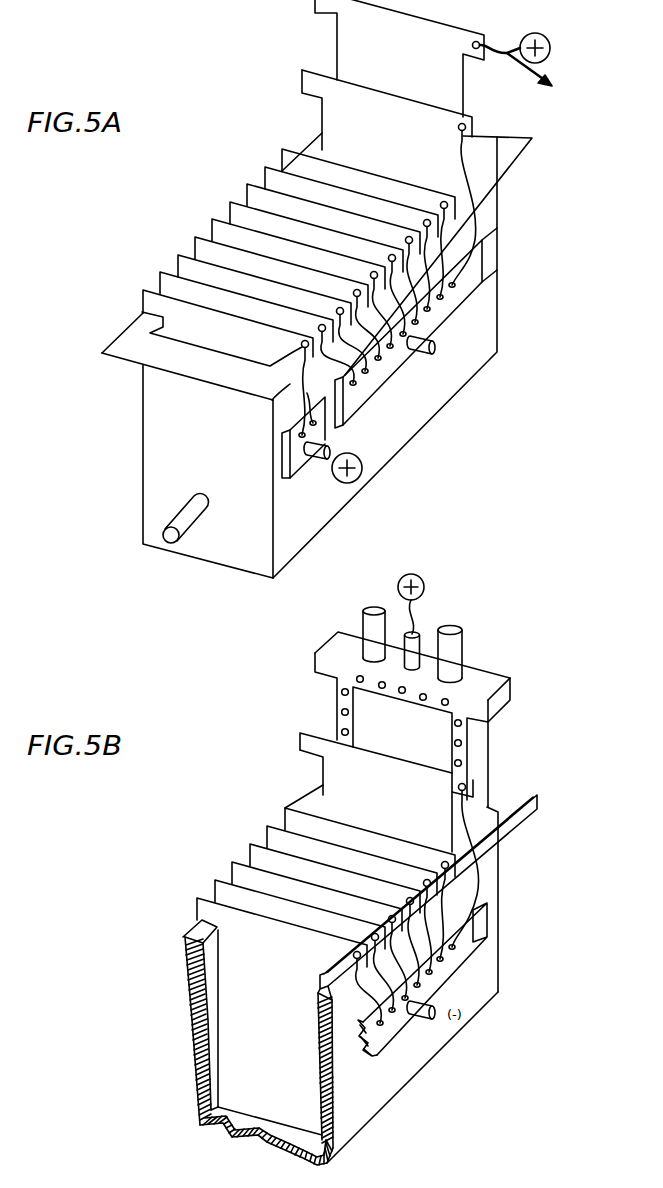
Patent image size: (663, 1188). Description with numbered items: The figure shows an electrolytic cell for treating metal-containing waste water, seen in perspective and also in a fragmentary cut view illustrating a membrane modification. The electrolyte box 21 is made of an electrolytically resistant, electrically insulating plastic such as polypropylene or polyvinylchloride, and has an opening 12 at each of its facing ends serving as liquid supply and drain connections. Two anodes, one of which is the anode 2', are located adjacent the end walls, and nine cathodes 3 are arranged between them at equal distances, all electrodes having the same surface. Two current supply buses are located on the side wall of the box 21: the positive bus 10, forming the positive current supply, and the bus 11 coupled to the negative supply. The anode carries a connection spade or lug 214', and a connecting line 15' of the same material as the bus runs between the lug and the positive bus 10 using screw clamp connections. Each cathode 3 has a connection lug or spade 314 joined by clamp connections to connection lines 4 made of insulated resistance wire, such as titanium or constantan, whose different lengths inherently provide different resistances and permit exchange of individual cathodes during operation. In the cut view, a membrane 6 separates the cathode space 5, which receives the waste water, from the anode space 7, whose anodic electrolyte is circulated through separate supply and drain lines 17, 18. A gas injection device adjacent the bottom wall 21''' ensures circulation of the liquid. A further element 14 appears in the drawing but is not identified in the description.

In FIG. 5A, the anode 2' is at (365, 58).
In FIG. 5A, the anode connection spade or lug 214' is at (536, 72).
In FIG. 5A, the cathodes 3 is at (222, 230).
In FIG. 5B, the cathodes 3 is at (223, 887).
In FIG. 5A, the opening 12 is at (172, 543).
In FIG. 5A, the positive bus terminal 10 is at (285, 458).
In FIG. 5A, the electrolyte box 21 is at (457, 298).
In FIG. 5A, the cathode connection lug or spade 314 is at (487, 197).
In FIG. 5A, the resistance connection lines 4 is at (473, 235).
In FIG. 5A, the negative bus 11 is at (473, 283).
In FIG. 5B, the negative bus 11 is at (473, 937).
In FIG. 5B, the electrolyte supply and drain line 18 is at (370, 607).
In FIG. 5B, the connecting line 15' is at (441, 618).
In FIG. 5B, the electrolyte supply and drain line 17 is at (456, 630).
In FIG. 5B, the anode space 7 is at (336, 704).
In FIG. 5B, the membrane 6 is at (435, 727).
In FIG. 5B, the terminal pin 14 is at (466, 788).
In FIG. 5B, the cathode space 5 is at (265, 1060).
In FIG. 5B, the bottom wall 21''' is at (321, 980).